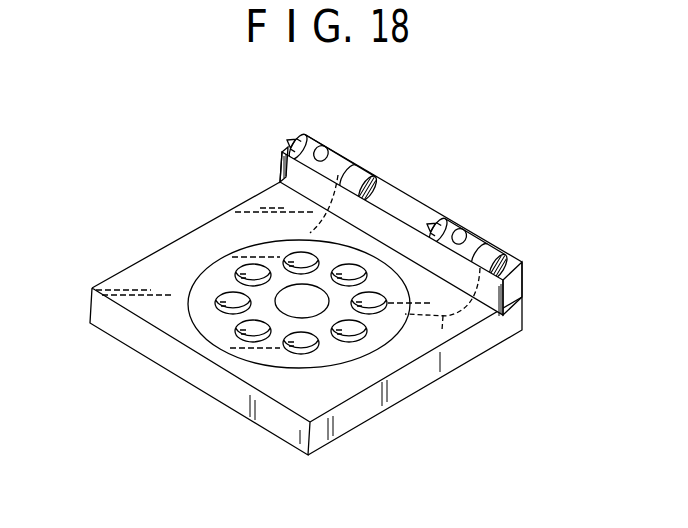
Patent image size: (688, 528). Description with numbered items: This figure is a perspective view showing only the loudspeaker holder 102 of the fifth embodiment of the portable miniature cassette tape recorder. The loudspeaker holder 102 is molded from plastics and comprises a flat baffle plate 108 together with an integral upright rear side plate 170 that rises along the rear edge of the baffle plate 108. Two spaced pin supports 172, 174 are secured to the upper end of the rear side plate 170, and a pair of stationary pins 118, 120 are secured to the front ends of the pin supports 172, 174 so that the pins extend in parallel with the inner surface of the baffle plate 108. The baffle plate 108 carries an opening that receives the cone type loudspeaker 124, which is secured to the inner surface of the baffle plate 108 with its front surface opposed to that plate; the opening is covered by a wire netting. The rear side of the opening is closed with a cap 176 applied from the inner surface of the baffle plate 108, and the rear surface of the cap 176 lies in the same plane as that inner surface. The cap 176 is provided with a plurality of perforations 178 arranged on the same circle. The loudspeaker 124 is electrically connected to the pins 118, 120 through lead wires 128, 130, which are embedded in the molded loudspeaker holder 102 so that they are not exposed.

The loudspeaker holder 102 is at (175, 233).
The baffle plate 108 is at (322, 402).
The stationary pin 118 is at (294, 132).
The stationary pin 120 is at (449, 222).
The cone type loudspeaker 124 is at (283, 380).
The lead wire 128 is at (311, 231).
The lead wire 130 is at (442, 326).
The rear side plate 170 is at (393, 231).
The pin support 172 is at (342, 158).
The pin support 174 is at (483, 243).
The cap 176 is at (253, 350).
The perforations 178 is at (351, 344).